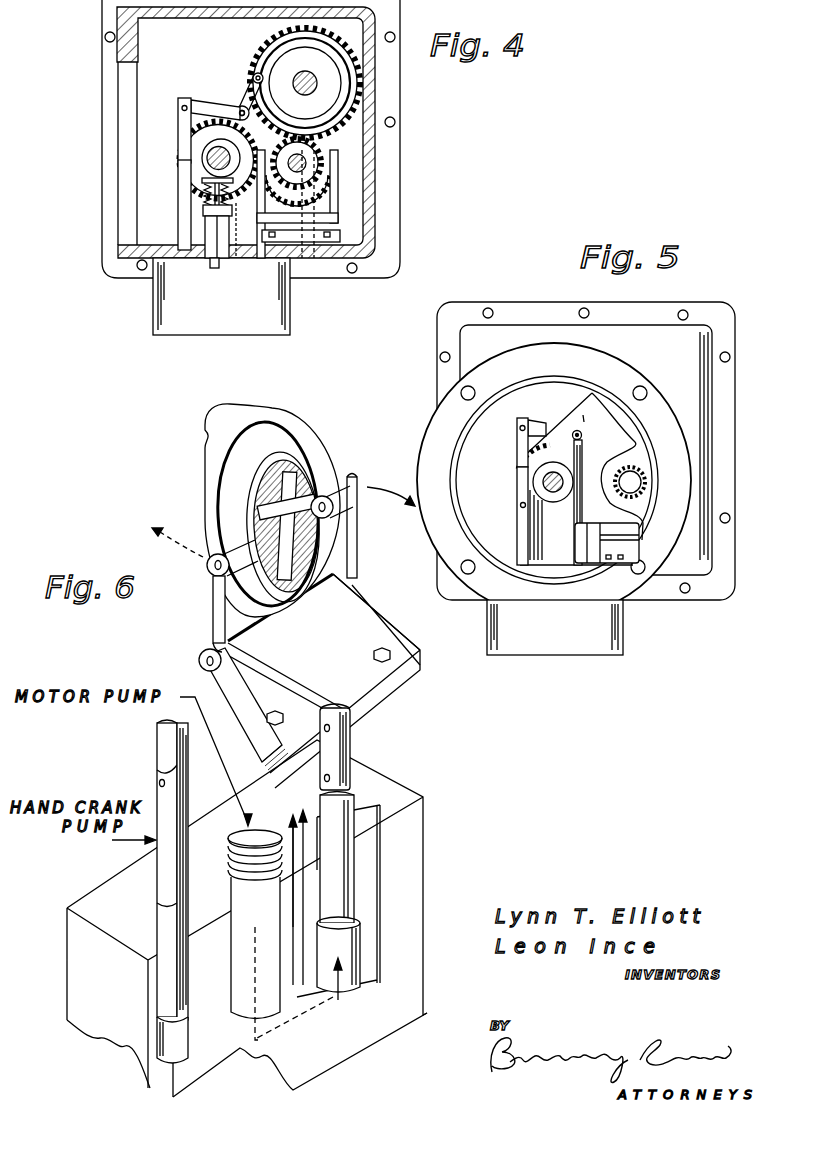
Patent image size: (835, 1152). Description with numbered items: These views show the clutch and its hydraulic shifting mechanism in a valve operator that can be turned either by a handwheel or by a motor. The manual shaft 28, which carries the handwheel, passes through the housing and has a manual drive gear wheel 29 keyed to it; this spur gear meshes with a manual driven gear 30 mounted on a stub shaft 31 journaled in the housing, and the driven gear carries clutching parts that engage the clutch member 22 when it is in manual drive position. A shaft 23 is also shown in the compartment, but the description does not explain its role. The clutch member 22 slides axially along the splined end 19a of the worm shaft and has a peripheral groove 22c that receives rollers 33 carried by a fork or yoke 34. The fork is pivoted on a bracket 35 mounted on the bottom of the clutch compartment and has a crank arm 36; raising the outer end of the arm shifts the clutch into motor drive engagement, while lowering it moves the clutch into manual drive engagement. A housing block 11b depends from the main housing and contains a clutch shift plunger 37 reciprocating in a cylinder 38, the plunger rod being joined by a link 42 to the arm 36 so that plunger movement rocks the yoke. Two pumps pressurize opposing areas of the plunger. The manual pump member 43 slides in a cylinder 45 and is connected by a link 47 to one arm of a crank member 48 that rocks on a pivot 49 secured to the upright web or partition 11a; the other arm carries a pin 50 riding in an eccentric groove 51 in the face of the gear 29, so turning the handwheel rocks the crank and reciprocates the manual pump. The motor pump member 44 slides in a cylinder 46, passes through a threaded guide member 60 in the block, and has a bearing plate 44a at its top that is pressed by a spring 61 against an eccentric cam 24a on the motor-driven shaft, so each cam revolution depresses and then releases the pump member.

In FIG. 5, the web or partition 11a is at (517, 457).
In FIG. 4, the housing block 11b is at (197, 328).
In FIG. 5, the housing block 11b is at (620, 642).
In FIG. 6, the housing block 11b is at (93, 893).
In FIG. 6, the splined end of shaft 19a is at (293, 497).
In FIG. 6, the clutch member 22 is at (263, 412).
In FIG. 6, the peripheral groove 22c is at (290, 438).
In FIG. 5, the shaft 23 is at (553, 490).
In FIG. 4, the eccentric cam 24a is at (233, 143).
In FIG. 4, the manual shaft 28 is at (292, 75).
In FIG. 4, the manual drive gear wheel 29 is at (248, 58).
In FIG. 4, the manual driven gear 30 is at (323, 147).
In FIG. 5, the stub shaft 31 is at (633, 483).
In FIG. 6, the rollers 33 is at (340, 510).
In FIG. 6, the fork or yoke 34 is at (217, 622).
In FIG. 5, the bracket 35 is at (623, 545).
In FIG. 6, the bracket 35 is at (383, 603).
In FIG. 6, the crank arm 36 is at (273, 685).
In FIG. 6, the clutch shift plunger 37 is at (350, 960).
In FIG. 6, the cylinder 38 is at (360, 893).
In FIG. 6, the link 42 is at (350, 755).
In FIG. 4, the manual pump member 43 is at (181, 192).
In FIG. 5, the manual pump member 43 is at (518, 523).
In FIG. 6, the manual pump member 43 is at (160, 852).
In FIG. 4, the motor pump member 44 is at (205, 220).
In FIG. 4, the bearing plate 44a is at (232, 203).
In FIG. 6, the cylinder 45 is at (158, 1043).
In FIG. 6, the cylinder 46 is at (240, 993).
In FIG. 4, the link 47 is at (183, 123).
In FIG. 5, the link 47 is at (517, 437).
In FIG. 4, the crank member 48 is at (215, 110).
In FIG. 5, the crank member 48 is at (537, 428).
In FIG. 4, the pivot 49 is at (238, 108).
In FIG. 5, the pivot 49 is at (575, 431).
In FIG. 4, the pin 50 is at (262, 82).
In FIG. 4, the eccentric groove 51 is at (298, 122).
In FIG. 4, the guide member 60 is at (215, 257).
In FIG. 4, the spring 61 is at (204, 207).